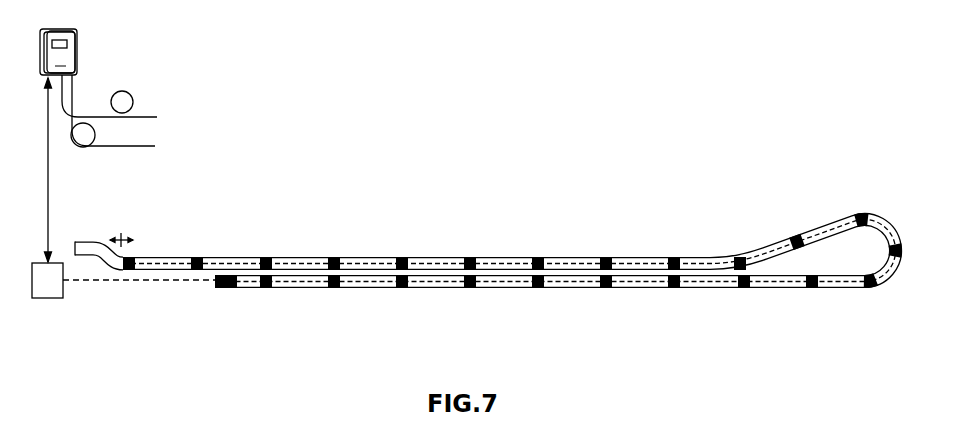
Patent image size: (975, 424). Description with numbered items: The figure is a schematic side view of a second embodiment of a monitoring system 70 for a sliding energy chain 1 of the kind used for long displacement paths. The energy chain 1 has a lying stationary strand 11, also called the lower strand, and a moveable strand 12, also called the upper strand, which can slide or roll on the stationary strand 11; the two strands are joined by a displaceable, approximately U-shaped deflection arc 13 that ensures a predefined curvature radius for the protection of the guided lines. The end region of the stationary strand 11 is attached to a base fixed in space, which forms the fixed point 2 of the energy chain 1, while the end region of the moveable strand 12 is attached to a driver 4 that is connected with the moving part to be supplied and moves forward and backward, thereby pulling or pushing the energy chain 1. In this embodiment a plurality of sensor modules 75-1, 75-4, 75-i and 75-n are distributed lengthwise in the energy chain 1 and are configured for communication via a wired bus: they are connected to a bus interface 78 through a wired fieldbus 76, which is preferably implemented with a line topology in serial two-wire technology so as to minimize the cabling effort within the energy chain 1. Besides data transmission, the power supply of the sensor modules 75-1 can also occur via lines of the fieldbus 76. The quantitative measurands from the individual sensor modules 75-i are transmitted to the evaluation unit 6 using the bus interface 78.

The energy chain 1 is at (636, 280).
The fixed point 2 is at (223, 290).
The driver 4 is at (85, 226).
The evaluation unit 6 is at (72, 57).
The stationary strand 11 is at (485, 297).
The moveable strand 12 is at (634, 250).
The deflection arc 13 is at (895, 218).
The monitoring system 70 is at (822, 89).
The sensor module 75-1 is at (128, 256).
The sensor module 75-4 is at (334, 257).
The sensor module 75-i is at (537, 257).
The sensor module 75-n is at (267, 284).
The fieldbus 76 is at (127, 282).
The bus interface 78 is at (60, 289).